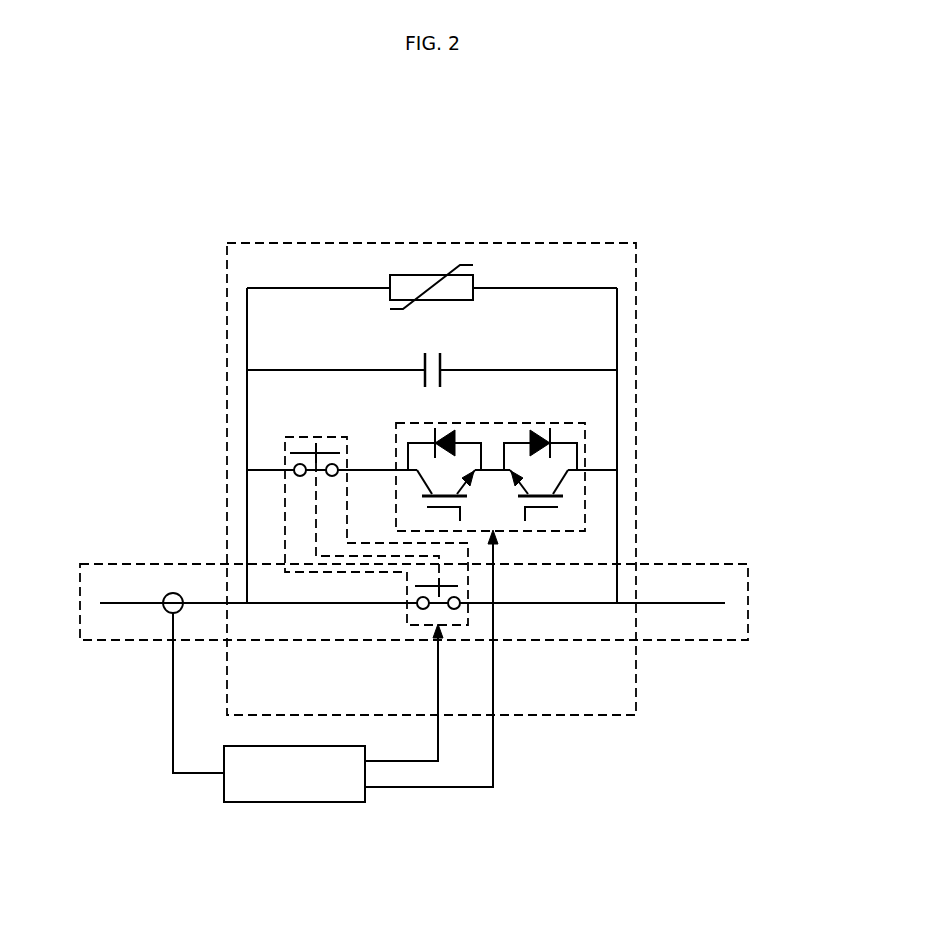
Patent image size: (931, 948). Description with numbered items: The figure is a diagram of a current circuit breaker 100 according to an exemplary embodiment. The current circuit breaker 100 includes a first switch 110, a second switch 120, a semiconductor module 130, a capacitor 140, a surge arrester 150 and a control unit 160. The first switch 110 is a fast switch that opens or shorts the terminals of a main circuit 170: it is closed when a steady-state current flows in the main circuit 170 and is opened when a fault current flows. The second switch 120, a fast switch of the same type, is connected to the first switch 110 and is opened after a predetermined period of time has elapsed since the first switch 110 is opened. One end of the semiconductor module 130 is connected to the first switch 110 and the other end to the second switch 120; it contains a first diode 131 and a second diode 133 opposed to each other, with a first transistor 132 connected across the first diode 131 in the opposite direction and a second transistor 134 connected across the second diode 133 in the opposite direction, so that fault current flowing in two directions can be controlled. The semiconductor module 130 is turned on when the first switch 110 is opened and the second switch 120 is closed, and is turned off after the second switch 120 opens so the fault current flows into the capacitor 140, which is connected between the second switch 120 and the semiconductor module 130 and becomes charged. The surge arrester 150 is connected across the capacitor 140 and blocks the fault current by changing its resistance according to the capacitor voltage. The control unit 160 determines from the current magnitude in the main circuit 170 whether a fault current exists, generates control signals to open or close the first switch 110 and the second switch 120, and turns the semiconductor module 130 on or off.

The current circuit breaker 100 is at (443, 131).
The first switch 110 is at (457, 608).
The second switch 120 is at (300, 453).
The semiconductor module 130 is at (568, 422).
The first diode 131 is at (433, 437).
The first transistor 132 is at (410, 498).
The second diode 133 is at (577, 456).
The second transistor 134 is at (565, 506).
The capacitor 140 is at (441, 357).
The surge arrester 150 is at (475, 280).
The control unit 160 is at (295, 803).
The main circuit 170 is at (725, 564).